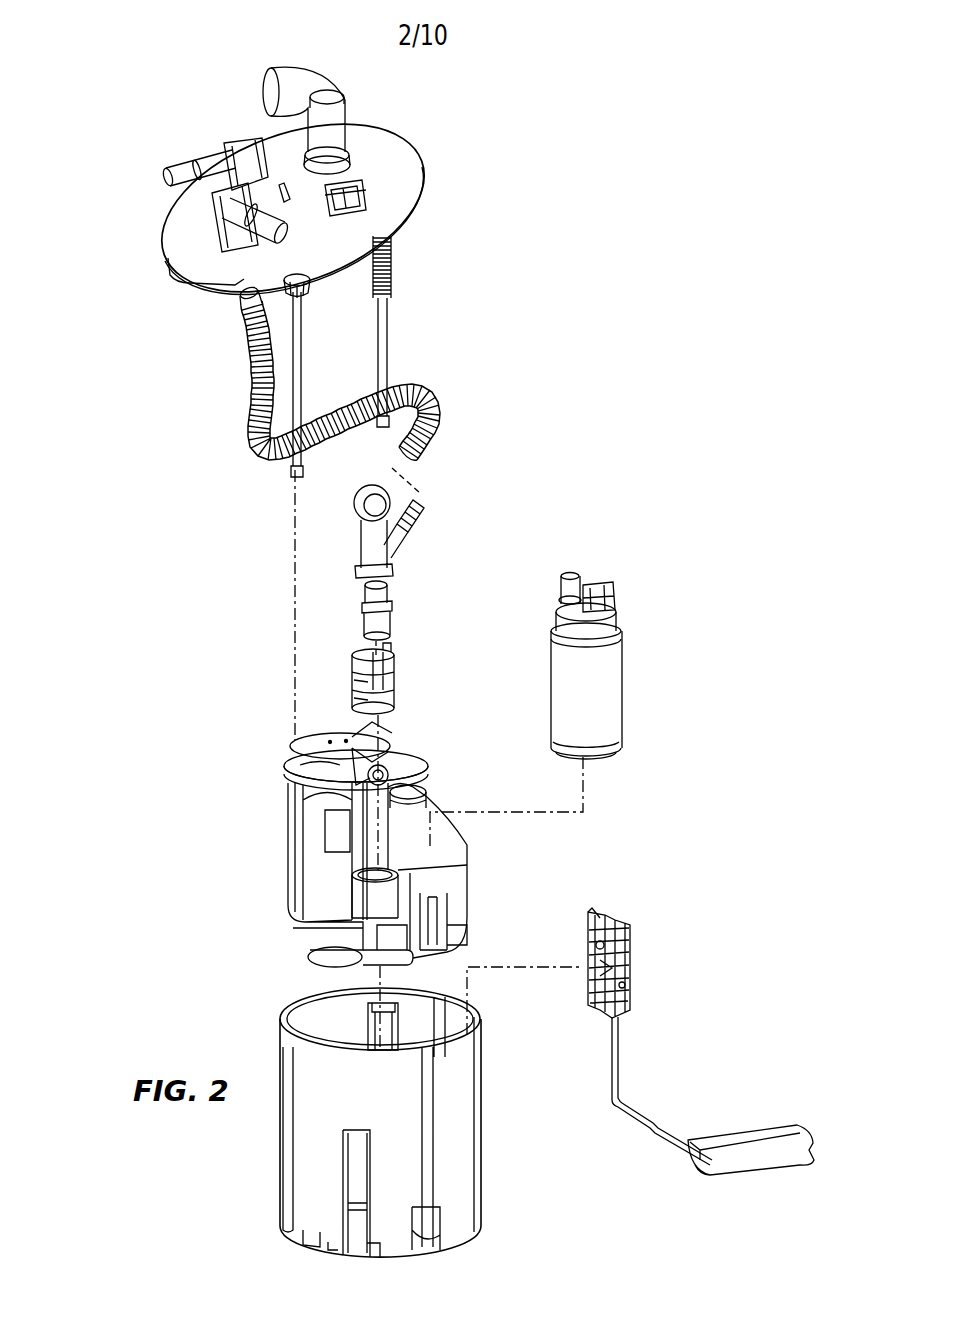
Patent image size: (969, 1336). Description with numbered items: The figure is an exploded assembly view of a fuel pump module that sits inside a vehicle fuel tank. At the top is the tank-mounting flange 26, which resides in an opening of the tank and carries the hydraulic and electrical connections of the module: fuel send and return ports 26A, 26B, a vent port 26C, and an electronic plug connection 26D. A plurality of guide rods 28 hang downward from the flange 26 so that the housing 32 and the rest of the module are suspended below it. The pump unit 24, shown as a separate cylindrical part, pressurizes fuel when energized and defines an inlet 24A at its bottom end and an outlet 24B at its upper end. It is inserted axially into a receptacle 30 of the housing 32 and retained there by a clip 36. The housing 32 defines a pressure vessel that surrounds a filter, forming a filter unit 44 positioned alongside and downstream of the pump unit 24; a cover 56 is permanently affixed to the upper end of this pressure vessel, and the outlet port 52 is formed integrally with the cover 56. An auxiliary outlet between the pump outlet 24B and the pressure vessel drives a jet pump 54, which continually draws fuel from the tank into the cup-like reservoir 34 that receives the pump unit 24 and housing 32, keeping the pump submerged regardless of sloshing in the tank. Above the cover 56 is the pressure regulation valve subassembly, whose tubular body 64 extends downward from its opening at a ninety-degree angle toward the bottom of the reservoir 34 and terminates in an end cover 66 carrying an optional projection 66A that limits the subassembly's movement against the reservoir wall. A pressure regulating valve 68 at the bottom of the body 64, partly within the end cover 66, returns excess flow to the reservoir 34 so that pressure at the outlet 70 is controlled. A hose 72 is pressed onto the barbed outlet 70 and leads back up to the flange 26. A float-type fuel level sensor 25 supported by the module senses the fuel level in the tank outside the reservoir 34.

The pump unit 24 is at (634, 664).
The inlet 24A is at (608, 752).
The outlet 24B is at (575, 583).
The fuel level sensor 25 is at (667, 973).
The tank-mounting flange 26 is at (410, 160).
The fuel send port 26A is at (279, 88).
The fuel return port 26B is at (182, 170).
The vent port 26C is at (252, 217).
The electronic plug connection 26D is at (368, 198).
The guide rods 28 is at (384, 345).
The receptacle 30 is at (457, 887).
The housing 32 is at (291, 835).
The reservoir 34 is at (278, 1016).
The clip 36 is at (440, 933).
The filter unit 44 is at (278, 800).
The outlet port 52 is at (386, 758).
The jet pump 54 is at (313, 957).
The cover 56 is at (317, 743).
The tubular body 64 is at (362, 540).
The end cover 66 is at (385, 690).
The projection 66A is at (353, 697).
The pressure regulating valve 68 is at (404, 594).
The outlet 70 is at (427, 520).
The hose 72 is at (250, 447).